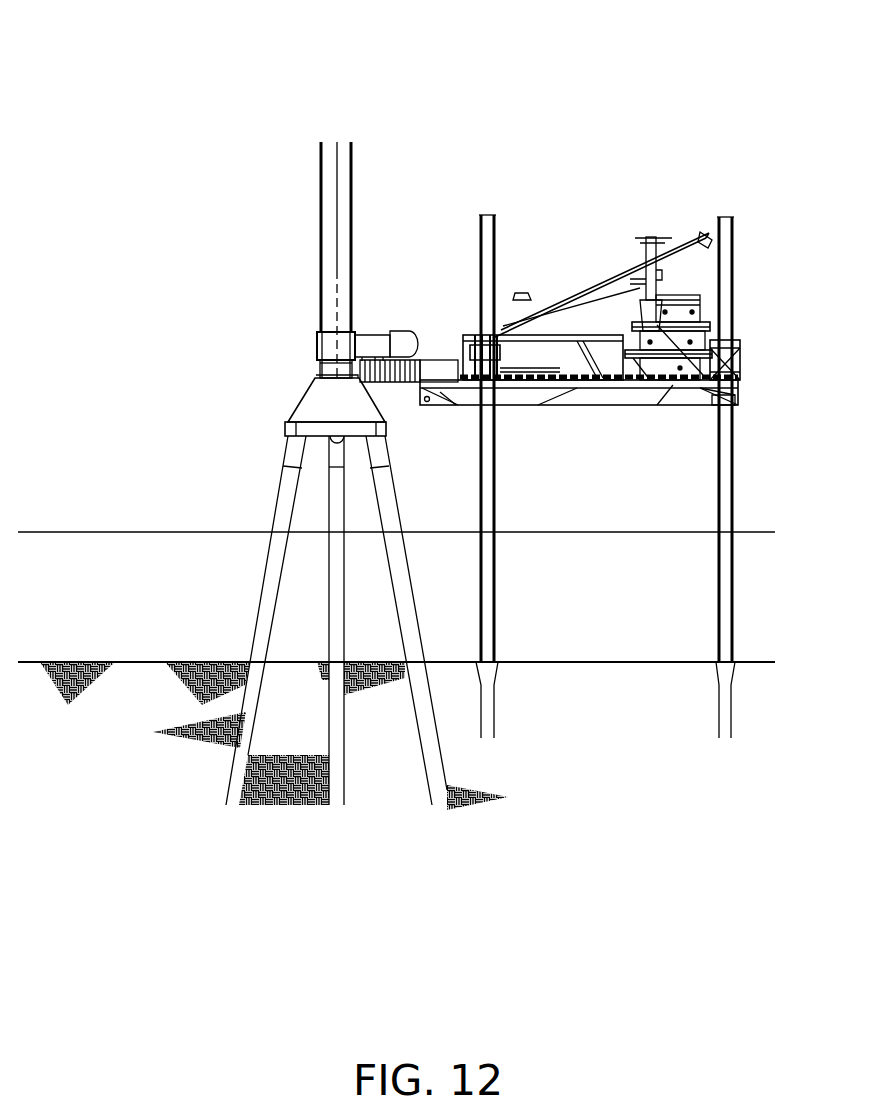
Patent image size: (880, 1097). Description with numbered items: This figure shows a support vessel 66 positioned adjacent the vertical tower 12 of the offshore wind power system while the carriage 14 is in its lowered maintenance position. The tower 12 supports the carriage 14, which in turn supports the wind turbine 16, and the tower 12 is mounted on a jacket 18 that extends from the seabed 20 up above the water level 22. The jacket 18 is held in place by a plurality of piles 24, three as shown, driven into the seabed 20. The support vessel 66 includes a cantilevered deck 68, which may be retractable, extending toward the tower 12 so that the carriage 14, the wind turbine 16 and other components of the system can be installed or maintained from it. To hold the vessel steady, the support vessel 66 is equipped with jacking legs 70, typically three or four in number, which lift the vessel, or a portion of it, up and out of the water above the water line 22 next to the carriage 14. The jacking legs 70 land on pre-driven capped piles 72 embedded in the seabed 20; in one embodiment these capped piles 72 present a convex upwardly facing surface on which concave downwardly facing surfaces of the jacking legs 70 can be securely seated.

The vertical tower 12 is at (351, 165).
The carriage 14 is at (320, 325).
The wind turbine 16 is at (403, 327).
The jacket 18 is at (295, 410).
The seabed 20 is at (588, 660).
The water level 22 is at (748, 532).
The piles 24 is at (238, 762).
The support vessel 66 is at (728, 338).
The cantilevered deck 68 is at (388, 383).
The jacking legs 70 is at (733, 632).
The pre-driven capped piles 72 is at (725, 682).